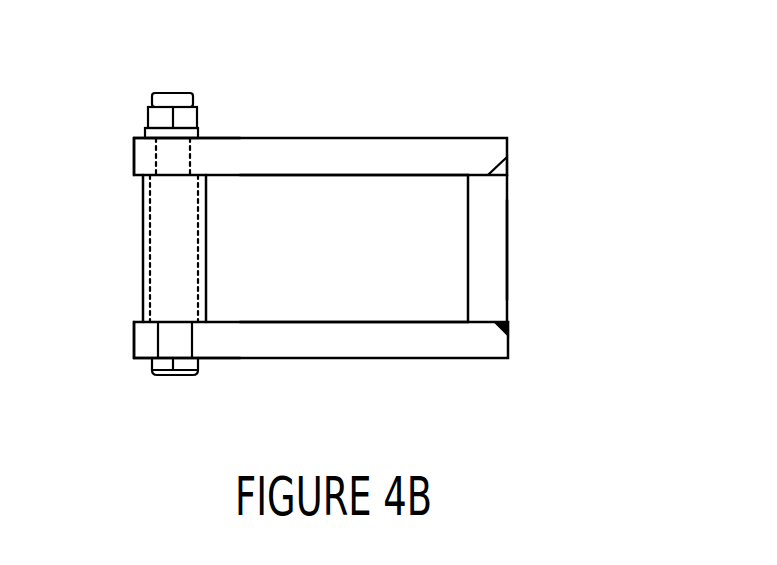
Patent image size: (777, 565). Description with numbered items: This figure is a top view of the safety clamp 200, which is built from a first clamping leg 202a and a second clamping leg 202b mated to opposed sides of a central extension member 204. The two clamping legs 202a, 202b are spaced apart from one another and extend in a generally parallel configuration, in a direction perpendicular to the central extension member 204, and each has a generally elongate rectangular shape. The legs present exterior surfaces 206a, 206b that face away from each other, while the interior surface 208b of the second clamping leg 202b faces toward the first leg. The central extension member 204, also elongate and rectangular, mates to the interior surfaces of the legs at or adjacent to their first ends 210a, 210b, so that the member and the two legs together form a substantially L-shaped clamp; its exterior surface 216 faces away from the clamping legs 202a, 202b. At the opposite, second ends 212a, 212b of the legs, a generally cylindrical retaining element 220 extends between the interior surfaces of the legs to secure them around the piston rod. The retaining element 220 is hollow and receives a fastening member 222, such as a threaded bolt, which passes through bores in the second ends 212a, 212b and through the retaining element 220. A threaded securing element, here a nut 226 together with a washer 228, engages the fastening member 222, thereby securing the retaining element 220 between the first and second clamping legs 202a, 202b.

The safety clamp 200 is at (574, 52).
The first clamping leg 202a is at (295, 116).
The second clamping leg 202b is at (258, 386).
The central extension member 204 is at (541, 221).
The exterior surface of first clamping leg 206a is at (451, 138).
The exterior surface of second clamping leg 206b is at (453, 358).
The interior surface of second clamping leg 208b is at (327, 321).
The first end of first clamping leg 210a is at (508, 150).
The first end of second clamping leg 210b is at (513, 345).
The second end of first clamping leg 212a is at (129, 158).
The second end of second clamping leg 212b is at (378, 177).
The exterior surface of central extension member 216 is at (508, 282).
The retaining element 220 is at (170, 233).
The fastening member 222 is at (166, 376).
The nut 226 is at (183, 117).
The washer 228 is at (143, 131).